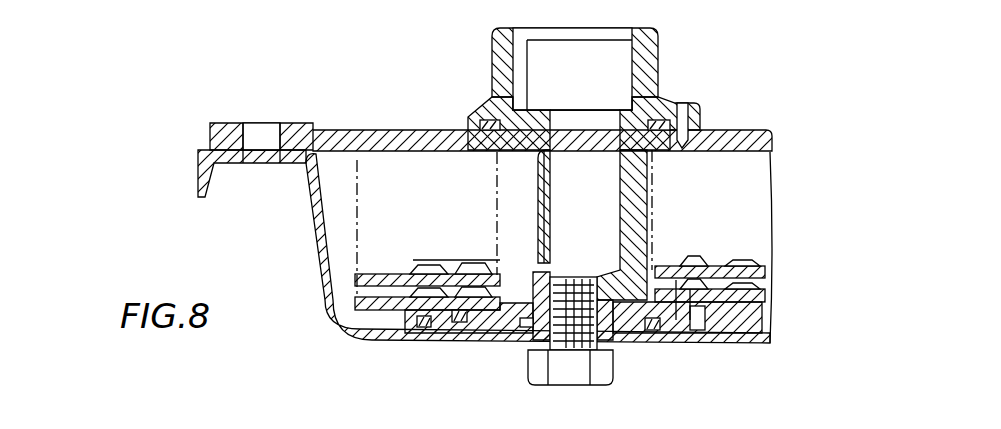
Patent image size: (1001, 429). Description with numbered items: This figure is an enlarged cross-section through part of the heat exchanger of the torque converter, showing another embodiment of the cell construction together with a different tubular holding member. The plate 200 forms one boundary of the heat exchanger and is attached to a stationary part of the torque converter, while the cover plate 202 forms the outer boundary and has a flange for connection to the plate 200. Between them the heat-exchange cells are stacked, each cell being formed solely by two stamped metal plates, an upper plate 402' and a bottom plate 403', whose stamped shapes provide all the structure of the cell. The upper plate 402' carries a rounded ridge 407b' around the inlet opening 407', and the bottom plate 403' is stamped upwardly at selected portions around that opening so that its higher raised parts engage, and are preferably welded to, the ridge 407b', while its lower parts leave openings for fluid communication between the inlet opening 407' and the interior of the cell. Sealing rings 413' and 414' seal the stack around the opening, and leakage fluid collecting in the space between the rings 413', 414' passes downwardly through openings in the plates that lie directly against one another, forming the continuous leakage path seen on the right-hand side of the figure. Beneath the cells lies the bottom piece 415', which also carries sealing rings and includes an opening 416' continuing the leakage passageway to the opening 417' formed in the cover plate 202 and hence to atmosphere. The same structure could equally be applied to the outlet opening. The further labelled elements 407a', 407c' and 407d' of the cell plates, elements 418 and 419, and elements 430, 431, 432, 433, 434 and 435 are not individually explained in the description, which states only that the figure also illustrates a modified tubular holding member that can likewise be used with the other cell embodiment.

The plate 200 is at (420, 128).
The cover plate 202 is at (330, 226).
The upper plate 402' is at (422, 259).
The bottom plate 403' is at (377, 296).
The sealing ring 413' is at (492, 265).
The sealing ring 414' is at (455, 254).
The bottom piece 415' is at (443, 349).
The insulating base 418 is at (514, 334).
The sealing ring 419 is at (420, 330).
The opening 416' is at (687, 340).
The opening 417' is at (726, 341).
The inlet opening 407' is at (585, 146).
The right terminal bar 407a' is at (710, 241).
The ridge 407b' is at (716, 276).
The lower right terminal bar 407c' is at (751, 266).
The terminal clamp 407d' is at (790, 280).
The sleeve 430 is at (540, 181).
The locating pin 431 is at (700, 114).
The fitting flange 432 is at (496, 100).
The threaded fitting 433 is at (660, 62).
The fitting neck 434 is at (604, 265).
The nut and bolt 435 is at (570, 372).